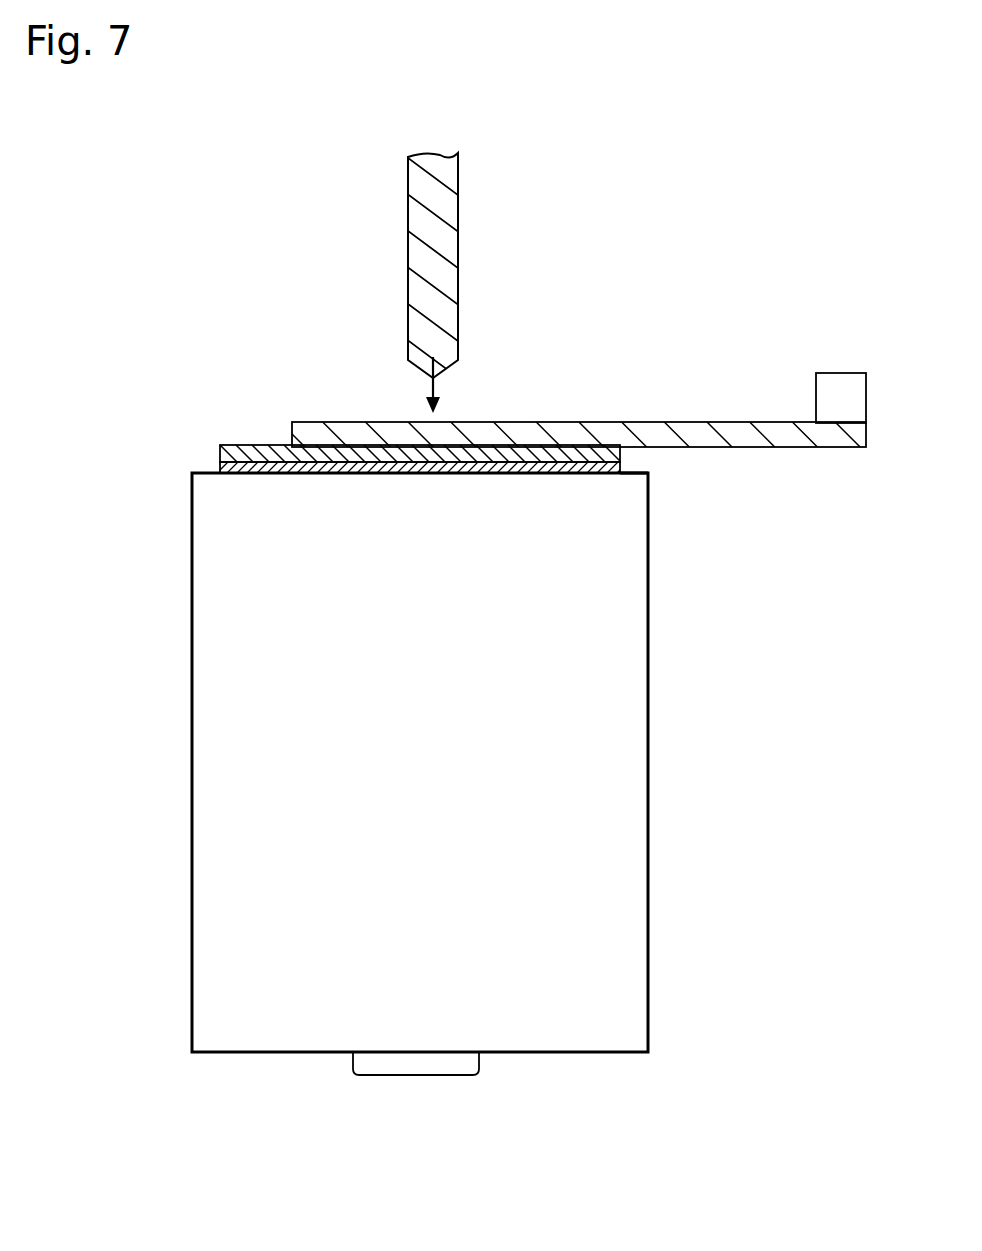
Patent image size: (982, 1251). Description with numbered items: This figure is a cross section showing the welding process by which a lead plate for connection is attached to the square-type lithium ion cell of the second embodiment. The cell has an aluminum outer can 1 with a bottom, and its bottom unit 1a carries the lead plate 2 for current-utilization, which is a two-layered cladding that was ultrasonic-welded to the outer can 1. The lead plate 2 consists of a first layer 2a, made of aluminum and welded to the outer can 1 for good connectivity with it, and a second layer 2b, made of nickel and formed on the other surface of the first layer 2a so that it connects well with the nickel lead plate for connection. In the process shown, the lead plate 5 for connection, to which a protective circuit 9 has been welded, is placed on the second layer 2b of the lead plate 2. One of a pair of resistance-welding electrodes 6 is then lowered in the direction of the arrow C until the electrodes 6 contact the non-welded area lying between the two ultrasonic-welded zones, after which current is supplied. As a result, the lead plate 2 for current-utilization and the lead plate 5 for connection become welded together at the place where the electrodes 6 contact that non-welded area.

The outer can 1 is at (626, 770).
The bottom unit 1a is at (637, 462).
The lead plate for current-utilization 2 is at (367, 436).
The first layer 2a is at (218, 467).
The second layer 2b is at (218, 455).
The lead plate for connection 5 is at (598, 432).
The resistance-welding electrodes 6 is at (445, 247).
The protective circuit 9 is at (838, 395).
The arrow C is at (438, 387).